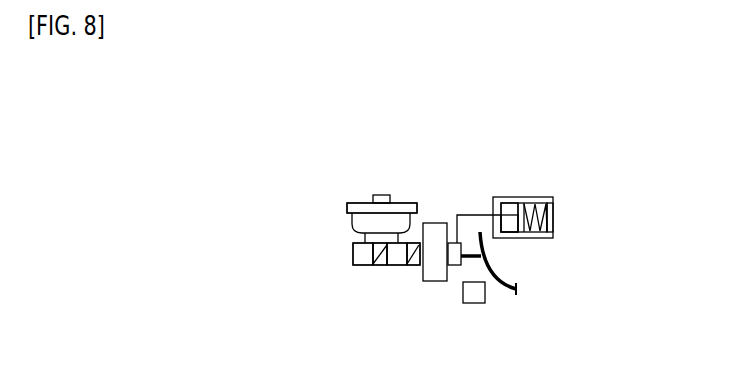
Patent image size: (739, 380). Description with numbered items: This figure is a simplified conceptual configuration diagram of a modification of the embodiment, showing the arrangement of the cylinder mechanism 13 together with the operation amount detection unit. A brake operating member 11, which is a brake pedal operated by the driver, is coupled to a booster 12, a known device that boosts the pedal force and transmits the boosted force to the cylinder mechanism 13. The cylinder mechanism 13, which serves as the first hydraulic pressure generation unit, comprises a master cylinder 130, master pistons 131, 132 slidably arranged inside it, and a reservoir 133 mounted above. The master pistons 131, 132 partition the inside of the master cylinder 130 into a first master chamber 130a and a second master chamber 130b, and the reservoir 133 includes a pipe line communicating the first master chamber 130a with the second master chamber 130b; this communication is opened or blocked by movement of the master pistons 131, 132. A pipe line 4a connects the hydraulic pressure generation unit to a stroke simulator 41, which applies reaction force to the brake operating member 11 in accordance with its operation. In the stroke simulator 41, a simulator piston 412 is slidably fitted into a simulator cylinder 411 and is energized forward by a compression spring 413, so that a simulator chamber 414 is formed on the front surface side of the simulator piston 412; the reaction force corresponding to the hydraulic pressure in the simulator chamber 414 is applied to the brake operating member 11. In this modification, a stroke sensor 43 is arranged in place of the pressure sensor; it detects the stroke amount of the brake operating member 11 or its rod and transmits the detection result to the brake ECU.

The cylinder mechanism 13 is at (321, 208).
The reservoir 133 is at (357, 203).
The master cylinder 130 is at (358, 243).
The second master chamber 130b is at (353, 248).
The master piston 132 is at (380, 265).
The first master chamber 130a is at (397, 264).
The master piston 131 is at (420, 243).
The booster 12 is at (441, 223).
The pipe line 4a is at (484, 213).
The brake operating member 11 is at (520, 290).
The stroke simulator 41 is at (553, 208).
The simulator cylinder 411 is at (522, 212).
The simulator piston 412 is at (523, 205).
The compression spring 413 is at (552, 215).
The simulator chamber 414 is at (509, 222).
The stroke sensor 43 is at (473, 303).